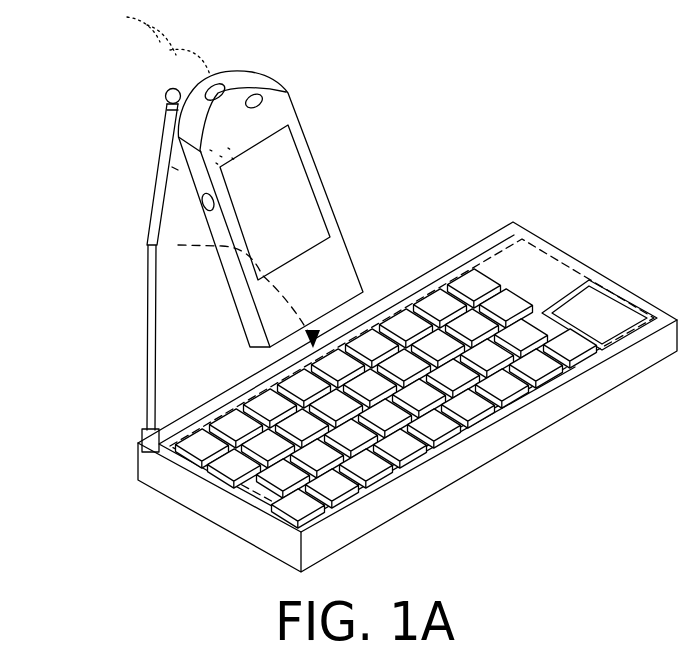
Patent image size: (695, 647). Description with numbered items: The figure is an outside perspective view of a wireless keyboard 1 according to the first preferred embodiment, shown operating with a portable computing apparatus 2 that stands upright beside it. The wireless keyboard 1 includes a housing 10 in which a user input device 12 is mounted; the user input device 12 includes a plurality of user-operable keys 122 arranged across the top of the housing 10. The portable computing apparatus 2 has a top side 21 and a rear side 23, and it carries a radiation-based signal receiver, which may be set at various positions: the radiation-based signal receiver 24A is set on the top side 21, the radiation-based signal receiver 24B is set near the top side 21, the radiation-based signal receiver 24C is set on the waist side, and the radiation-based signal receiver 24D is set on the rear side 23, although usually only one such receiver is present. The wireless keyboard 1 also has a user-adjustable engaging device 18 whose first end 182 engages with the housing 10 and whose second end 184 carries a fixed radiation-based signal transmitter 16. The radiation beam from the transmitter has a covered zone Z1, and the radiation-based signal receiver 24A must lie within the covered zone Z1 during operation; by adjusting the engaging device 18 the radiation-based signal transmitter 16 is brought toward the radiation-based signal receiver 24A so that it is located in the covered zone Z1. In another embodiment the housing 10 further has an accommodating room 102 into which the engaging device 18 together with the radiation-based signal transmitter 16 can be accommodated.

The wireless keyboard 1 is at (543, 221).
The housing 10 is at (198, 497).
The accommodating room 102 is at (407, 307).
The user input device 12 is at (617, 268).
The user-operable keys 122 is at (490, 312).
The radiation-based signal transmitter 16 is at (165, 93).
The user-adjustable engaging device 18 is at (150, 307).
The first end 182 is at (145, 436).
The second end 184 is at (166, 107).
The portable computing apparatus 2 is at (352, 222).
The top side 21 is at (236, 90).
The rear side 23 is at (170, 152).
The radiation-based signal receiver 24A is at (212, 87).
The radiation-based signal receiver 24B is at (264, 98).
The radiation-based signal receiver 24C is at (201, 201).
The radiation-based signal receiver 24D is at (172, 168).
The covered zone Z1 is at (150, 62).